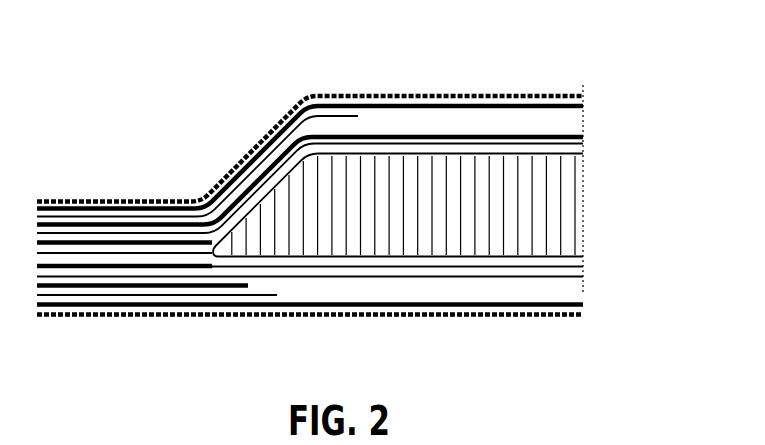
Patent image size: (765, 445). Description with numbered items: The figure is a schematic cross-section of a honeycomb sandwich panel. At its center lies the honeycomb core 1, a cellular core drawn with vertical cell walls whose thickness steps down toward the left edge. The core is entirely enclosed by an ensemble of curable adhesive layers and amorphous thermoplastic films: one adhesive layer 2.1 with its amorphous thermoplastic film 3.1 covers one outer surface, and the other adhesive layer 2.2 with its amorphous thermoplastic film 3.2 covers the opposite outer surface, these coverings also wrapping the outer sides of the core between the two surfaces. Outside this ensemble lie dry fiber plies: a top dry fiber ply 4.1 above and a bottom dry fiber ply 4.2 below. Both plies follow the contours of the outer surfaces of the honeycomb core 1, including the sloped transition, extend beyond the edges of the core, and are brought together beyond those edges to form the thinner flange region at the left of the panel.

The honeycomb core 1 is at (540, 195).
The bottom curable adhesive layer 2.1 is at (323, 130).
The amorphous thermoplastic film 3.1 is at (515, 142).
The top curable adhesive layer 2.2 is at (372, 244).
The amorphous thermoplastic film 3.2 is at (522, 267).
The top dry fiber ply 4.1 is at (110, 198).
The bottom dry fiber ply 4.2 is at (94, 287).